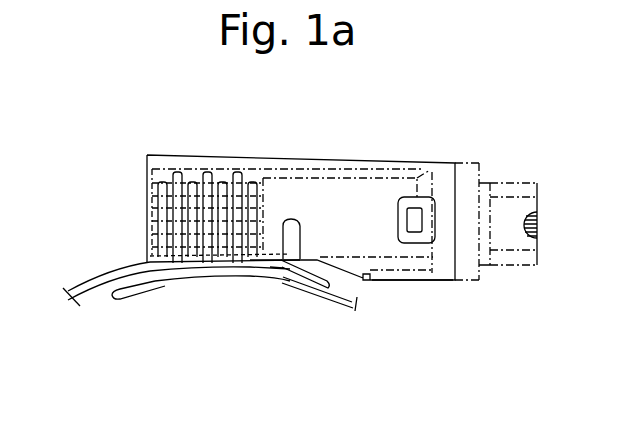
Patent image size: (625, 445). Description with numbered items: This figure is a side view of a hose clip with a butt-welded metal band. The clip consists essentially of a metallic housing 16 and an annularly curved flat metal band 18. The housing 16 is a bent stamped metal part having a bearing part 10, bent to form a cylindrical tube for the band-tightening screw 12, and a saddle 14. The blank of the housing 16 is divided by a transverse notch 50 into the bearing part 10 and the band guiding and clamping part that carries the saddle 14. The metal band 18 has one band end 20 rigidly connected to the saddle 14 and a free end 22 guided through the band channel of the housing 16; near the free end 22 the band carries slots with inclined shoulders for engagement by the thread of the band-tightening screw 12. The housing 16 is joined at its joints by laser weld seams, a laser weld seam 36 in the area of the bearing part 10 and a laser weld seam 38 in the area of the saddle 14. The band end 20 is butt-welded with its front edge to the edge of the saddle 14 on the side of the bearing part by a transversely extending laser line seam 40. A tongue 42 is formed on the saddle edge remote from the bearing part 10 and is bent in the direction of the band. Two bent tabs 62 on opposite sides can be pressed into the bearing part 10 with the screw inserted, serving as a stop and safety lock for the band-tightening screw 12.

The bearing part 10 is at (438, 207).
The band-tightening screw 12 is at (507, 208).
The saddle 14 is at (180, 285).
The housing 16 is at (190, 158).
The metal band 18 is at (356, 302).
The band end 20 is at (302, 290).
The free end 22 is at (88, 280).
The laser weld seam 36 is at (430, 285).
The laser weld seam 38 is at (223, 280).
The laser line seam 40 is at (281, 270).
The tongue 42 is at (118, 297).
The transverse notch 50 is at (283, 245).
The bent tabs 62 is at (410, 217).